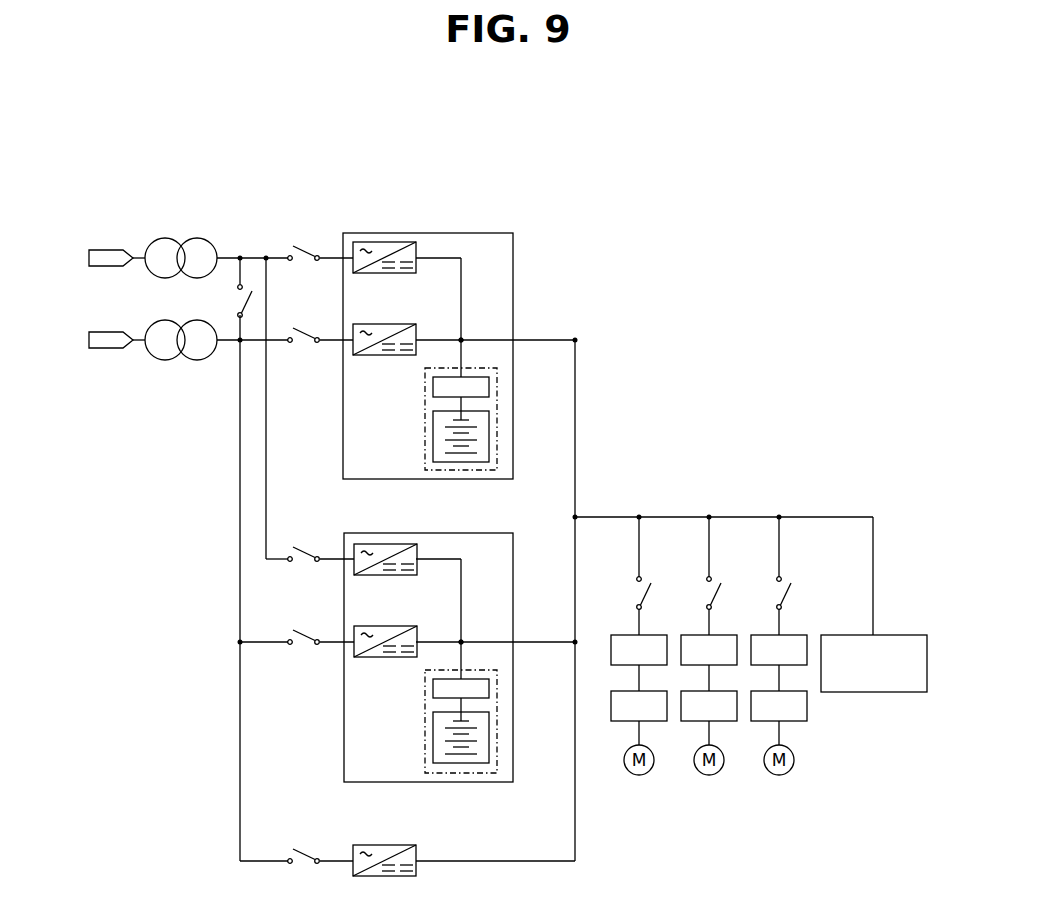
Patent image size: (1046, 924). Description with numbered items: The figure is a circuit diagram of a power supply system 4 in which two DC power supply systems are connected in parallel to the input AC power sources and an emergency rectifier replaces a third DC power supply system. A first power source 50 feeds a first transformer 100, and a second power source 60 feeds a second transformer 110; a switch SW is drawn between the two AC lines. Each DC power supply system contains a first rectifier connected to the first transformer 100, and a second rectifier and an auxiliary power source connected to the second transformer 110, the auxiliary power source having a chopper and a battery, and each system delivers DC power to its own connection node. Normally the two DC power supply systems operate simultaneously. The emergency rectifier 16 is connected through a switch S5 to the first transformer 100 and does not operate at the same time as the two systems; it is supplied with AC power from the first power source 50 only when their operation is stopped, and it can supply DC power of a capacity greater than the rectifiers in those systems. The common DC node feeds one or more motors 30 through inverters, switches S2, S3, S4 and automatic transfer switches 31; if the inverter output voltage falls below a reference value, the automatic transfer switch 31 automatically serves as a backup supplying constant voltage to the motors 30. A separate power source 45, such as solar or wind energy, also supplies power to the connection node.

The power supply system 4 is at (522, 118).
The second power source 60 is at (108, 249).
The second transformer 110 is at (166, 238).
The first power source 50 is at (108, 331).
The first transformer 100 is at (166, 320).
The switch SW is at (229, 301).
The switch S5 is at (304, 869).
The emergency rectifier 16 is at (385, 845).
The switch S2 is at (657, 593).
The switch S3 is at (727, 593).
The switch S4 is at (797, 593).
The automatic transfer switch 31 is at (609, 721).
The motors 30 is at (709, 800).
The power source 45 is at (873, 692).